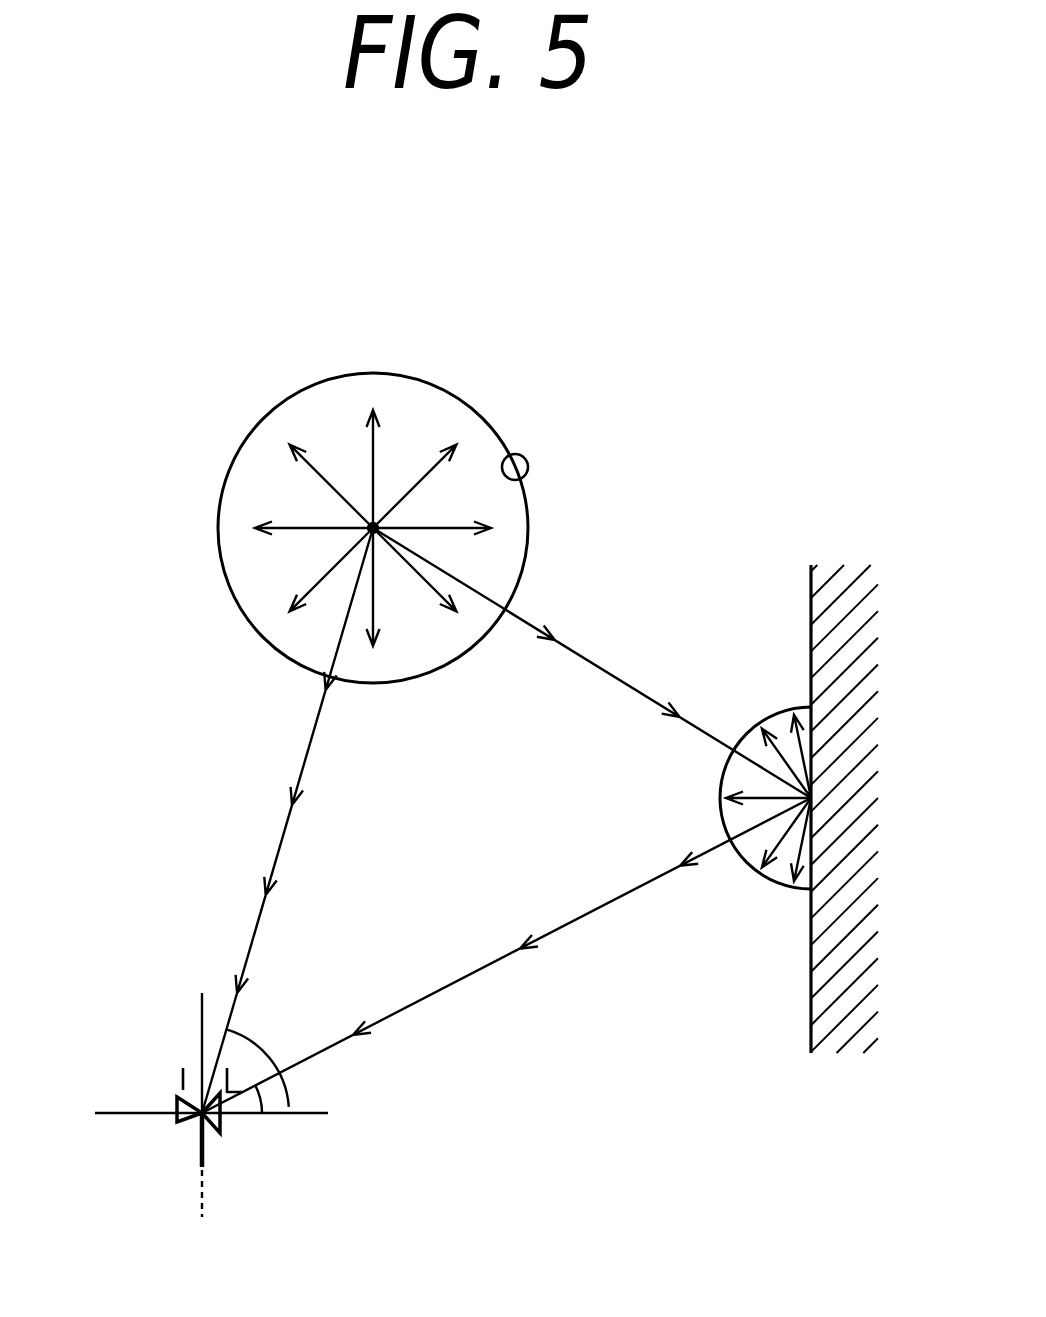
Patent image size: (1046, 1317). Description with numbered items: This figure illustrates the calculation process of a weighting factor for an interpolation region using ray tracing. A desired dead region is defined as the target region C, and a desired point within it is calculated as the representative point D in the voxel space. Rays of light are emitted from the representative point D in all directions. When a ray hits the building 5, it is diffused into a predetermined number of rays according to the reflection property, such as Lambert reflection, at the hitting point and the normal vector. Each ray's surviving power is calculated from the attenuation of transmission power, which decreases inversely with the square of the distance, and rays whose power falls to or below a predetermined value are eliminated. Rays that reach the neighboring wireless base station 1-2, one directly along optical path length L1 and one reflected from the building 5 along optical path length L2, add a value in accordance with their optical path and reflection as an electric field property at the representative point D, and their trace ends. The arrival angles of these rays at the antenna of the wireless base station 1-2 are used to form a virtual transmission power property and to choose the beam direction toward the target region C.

The target region C is at (325, 396).
The representative point D is at (373, 528).
The building 5 is at (810, 607).
The optical path length L1 is at (287, 820).
The optical path length L2 is at (506, 955).
The wireless base station 1-2 is at (183, 1080).